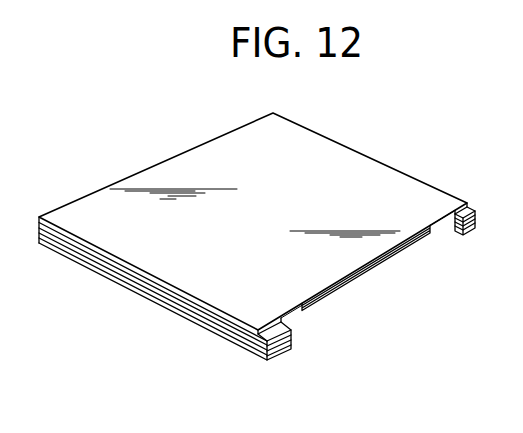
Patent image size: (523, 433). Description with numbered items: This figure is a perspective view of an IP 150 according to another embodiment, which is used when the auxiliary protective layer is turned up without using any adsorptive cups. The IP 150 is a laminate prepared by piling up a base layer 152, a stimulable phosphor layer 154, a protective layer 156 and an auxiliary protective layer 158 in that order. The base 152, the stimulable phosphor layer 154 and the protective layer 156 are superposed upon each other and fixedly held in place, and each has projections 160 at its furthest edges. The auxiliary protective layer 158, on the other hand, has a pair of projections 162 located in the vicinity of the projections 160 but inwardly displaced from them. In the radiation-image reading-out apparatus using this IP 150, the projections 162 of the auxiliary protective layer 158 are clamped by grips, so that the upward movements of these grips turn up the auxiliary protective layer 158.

The IP 150 is at (117, 285).
The base layer 152 is at (73, 260).
The stimulable phosphor layer 154 is at (232, 333).
The protective layer 156 is at (185, 303).
The auxiliary protective layer 158 is at (353, 255).
The projections 160 is at (277, 355).
The projections 162 is at (299, 319).